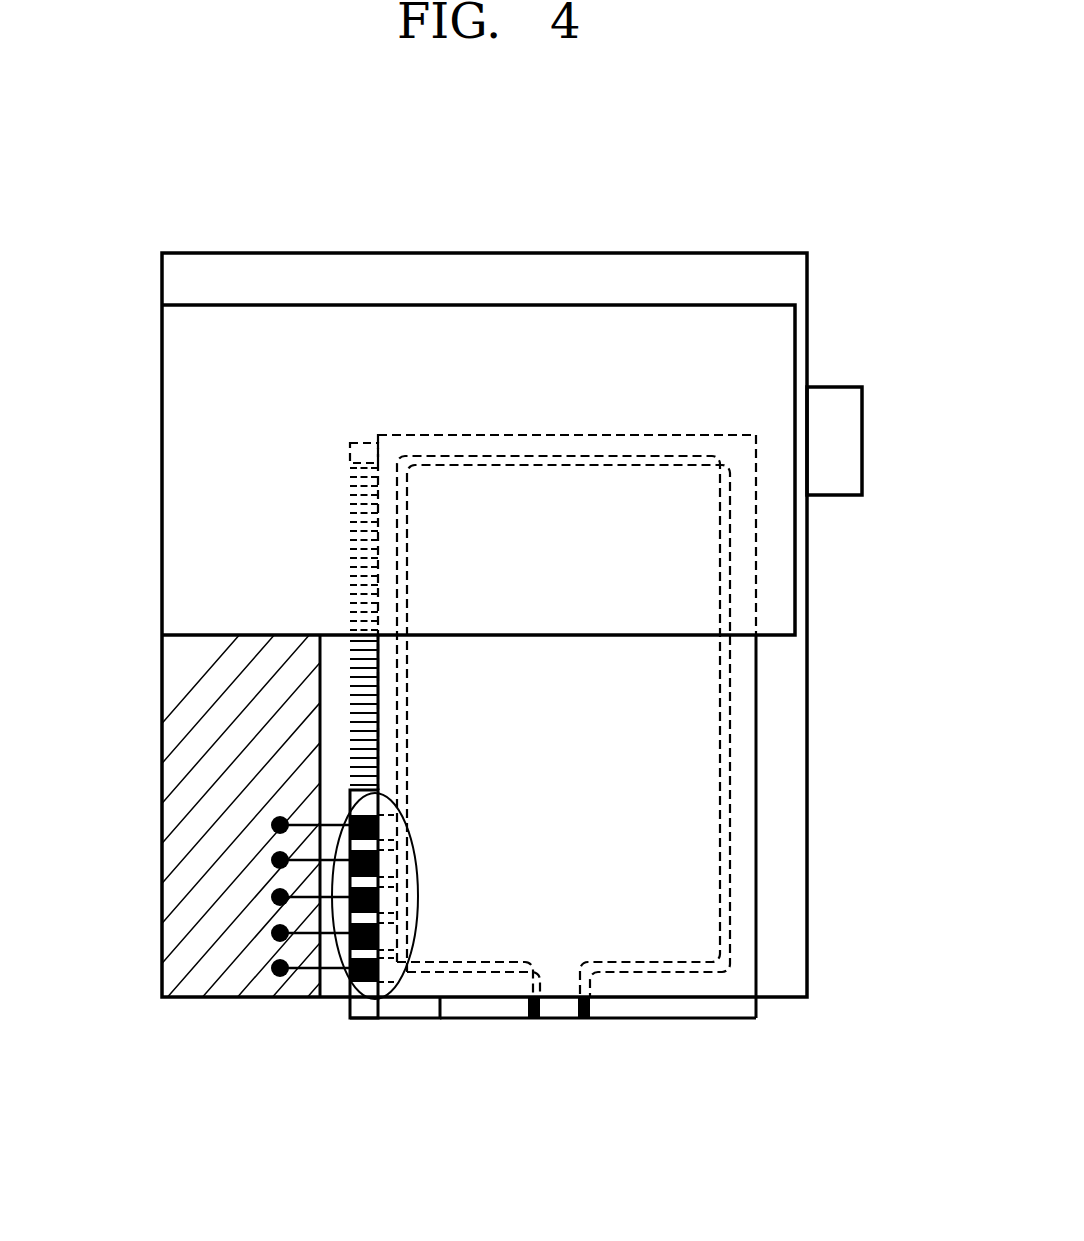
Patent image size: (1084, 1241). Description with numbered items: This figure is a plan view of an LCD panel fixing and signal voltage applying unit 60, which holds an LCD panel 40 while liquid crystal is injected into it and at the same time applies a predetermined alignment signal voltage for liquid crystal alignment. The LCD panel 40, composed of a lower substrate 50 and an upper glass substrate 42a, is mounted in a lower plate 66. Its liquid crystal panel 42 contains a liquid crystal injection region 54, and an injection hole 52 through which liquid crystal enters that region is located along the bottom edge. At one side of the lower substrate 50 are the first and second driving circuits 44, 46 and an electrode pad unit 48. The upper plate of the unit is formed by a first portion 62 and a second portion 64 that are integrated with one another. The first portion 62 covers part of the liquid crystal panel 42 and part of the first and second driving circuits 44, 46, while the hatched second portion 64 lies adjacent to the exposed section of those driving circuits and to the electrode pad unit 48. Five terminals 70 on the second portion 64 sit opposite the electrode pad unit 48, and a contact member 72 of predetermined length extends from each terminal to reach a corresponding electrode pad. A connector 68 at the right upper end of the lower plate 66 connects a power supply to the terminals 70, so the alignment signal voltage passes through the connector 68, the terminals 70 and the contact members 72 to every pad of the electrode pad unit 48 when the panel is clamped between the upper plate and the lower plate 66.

The LCD panel 40 is at (553, 1074).
The liquid crystal panel 42 is at (634, 716).
The upper glass substrate 42a is at (440, 1019).
The first driving circuit 44 is at (211, 612).
The second driving circuit 46 is at (364, 549).
The electrode pad unit 48 is at (418, 893).
The lower substrate 50 is at (653, 1019).
The injection hole 52 is at (557, 1005).
The liquid crystal injection region 54 is at (727, 930).
The LCD panel fixing and signal voltage applying unit 60 is at (150, 246).
The first portion 62 is at (183, 446).
The second portion 64 is at (183, 755).
The lower plate 66 is at (785, 808).
The connector 68 is at (852, 440).
The terminals 70 is at (278, 978).
The contact member 72 is at (305, 978).